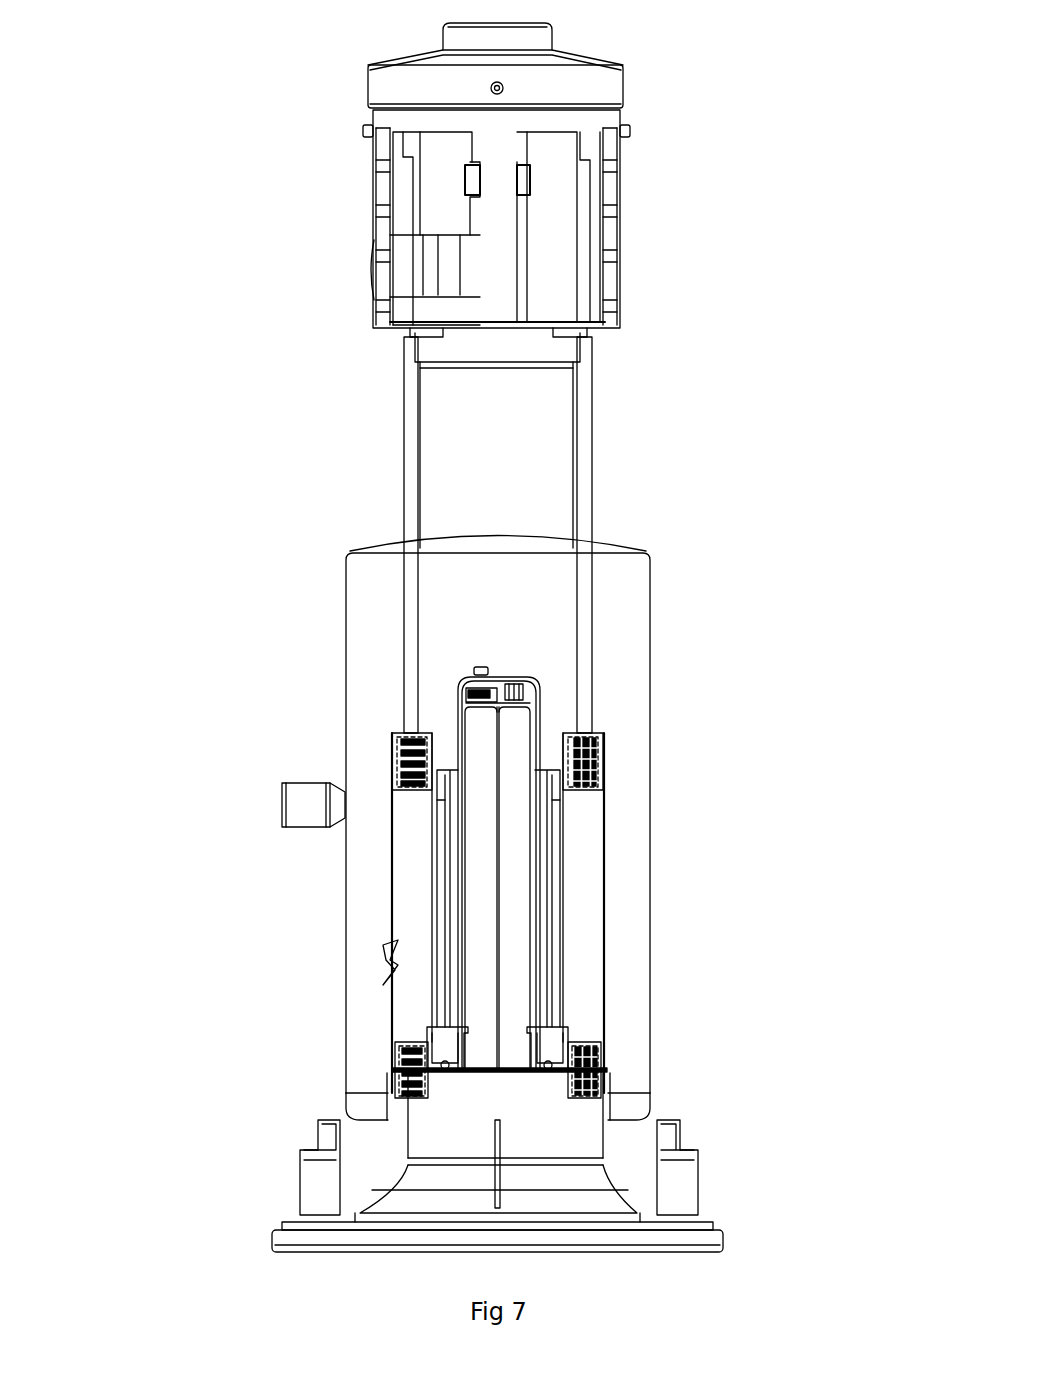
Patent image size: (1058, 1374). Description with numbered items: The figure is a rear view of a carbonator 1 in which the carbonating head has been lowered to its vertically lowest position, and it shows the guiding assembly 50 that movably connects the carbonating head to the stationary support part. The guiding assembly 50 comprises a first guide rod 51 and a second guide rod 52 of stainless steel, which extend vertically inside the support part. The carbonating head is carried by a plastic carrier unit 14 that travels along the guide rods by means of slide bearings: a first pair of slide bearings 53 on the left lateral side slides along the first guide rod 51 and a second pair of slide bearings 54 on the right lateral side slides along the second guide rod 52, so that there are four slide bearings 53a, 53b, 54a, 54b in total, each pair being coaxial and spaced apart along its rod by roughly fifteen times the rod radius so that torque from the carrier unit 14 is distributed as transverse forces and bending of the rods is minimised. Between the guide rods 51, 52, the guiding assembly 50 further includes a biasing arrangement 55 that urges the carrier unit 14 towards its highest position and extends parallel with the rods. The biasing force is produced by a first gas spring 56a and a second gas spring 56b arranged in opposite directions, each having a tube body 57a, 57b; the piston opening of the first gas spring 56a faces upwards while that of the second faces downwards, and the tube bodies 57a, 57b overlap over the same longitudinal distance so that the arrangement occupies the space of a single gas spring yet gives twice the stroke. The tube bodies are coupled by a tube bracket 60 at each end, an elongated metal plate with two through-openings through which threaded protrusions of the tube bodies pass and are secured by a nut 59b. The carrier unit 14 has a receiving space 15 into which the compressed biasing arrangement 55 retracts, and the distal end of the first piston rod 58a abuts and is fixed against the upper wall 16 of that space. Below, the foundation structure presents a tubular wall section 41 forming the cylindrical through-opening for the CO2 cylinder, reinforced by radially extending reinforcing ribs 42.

The carbonator 1 is at (316, 34).
The carrier unit 14 is at (363, 890).
The receiving space 15 is at (463, 853).
The upper wall 16 is at (510, 677).
The tubular wall section 41 is at (557, 1135).
The reinforcing ribs 42 is at (637, 1177).
The guiding assembly 50 is at (330, 484).
The first guide rod 51 is at (412, 492).
The second guide rod 52 is at (583, 467).
The first pair of slide bearings 53 is at (368, 700).
The slide bearing 53a is at (402, 757).
The slide bearing 53b is at (402, 1063).
The second pair of slide bearings 54 is at (610, 714).
The slide bearing 54a is at (590, 766).
The slide bearing 54b is at (592, 1050).
The biasing arrangement 55 is at (530, 640).
The first gas spring 56a is at (480, 880).
The second gas spring 56b is at (513, 855).
The tube body 57a is at (467, 1007).
The tube body 57b is at (527, 985).
The first piston rod 58a is at (481, 668).
The nut 59b is at (530, 690).
The tube bracket 60 is at (473, 703).